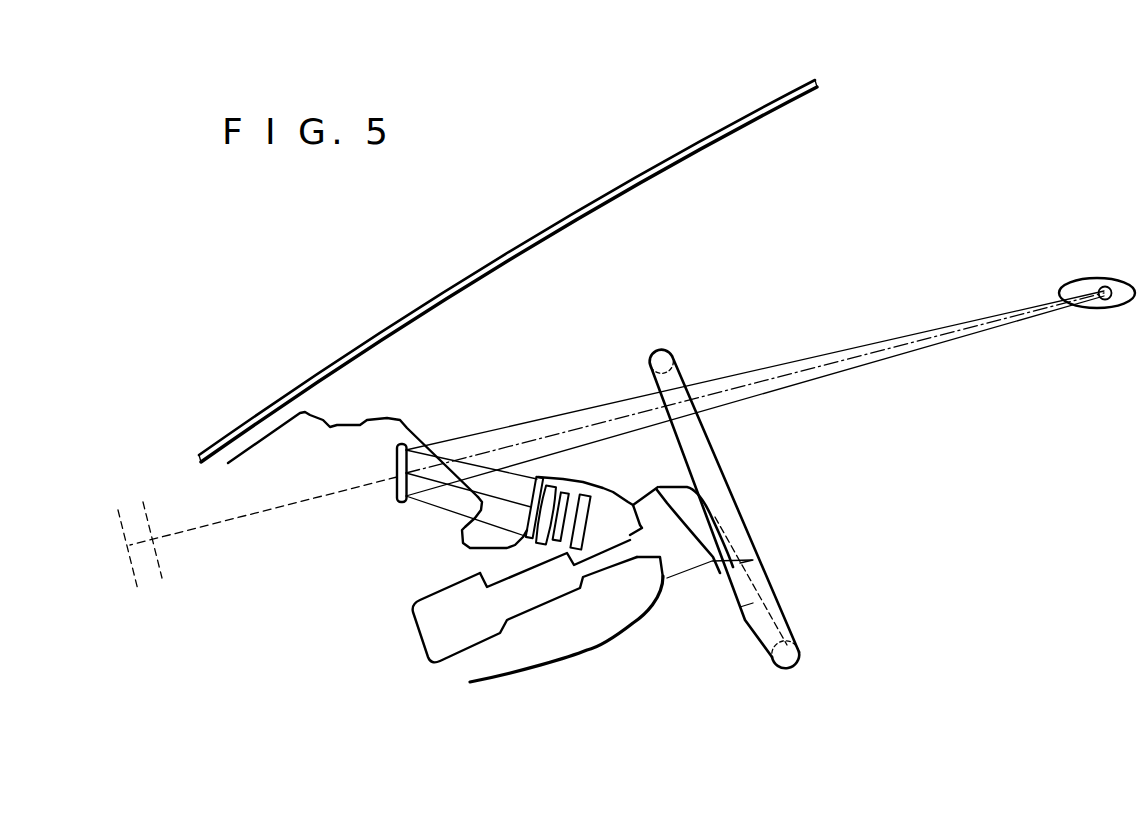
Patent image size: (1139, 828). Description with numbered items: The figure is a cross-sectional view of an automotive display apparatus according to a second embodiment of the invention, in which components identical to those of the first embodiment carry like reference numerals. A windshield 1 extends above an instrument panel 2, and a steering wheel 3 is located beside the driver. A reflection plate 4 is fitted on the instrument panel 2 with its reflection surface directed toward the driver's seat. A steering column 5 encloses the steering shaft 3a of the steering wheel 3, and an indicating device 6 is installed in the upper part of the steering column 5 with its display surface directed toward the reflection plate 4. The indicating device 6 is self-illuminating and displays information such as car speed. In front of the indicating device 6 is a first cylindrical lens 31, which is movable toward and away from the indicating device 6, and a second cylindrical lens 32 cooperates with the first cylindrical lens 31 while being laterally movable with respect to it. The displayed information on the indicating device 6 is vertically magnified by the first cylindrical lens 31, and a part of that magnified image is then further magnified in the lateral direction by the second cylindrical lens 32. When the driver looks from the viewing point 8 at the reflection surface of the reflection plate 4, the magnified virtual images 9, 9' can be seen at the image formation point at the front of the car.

The windshield 1 is at (505, 258).
The instrument panel 2 is at (410, 432).
The steering wheel 3 is at (730, 510).
The steering shaft 3a is at (540, 590).
The reflection plate 4 is at (402, 505).
The steering column 5 is at (600, 530).
The indicating device 6 is at (580, 478).
The viewing point 8 is at (1108, 300).
The magnified virtual image 9 is at (183, 549).
The magnified virtual image 9' is at (144, 570).
The first cylindrical lens 31 is at (556, 470).
The second cylindrical lens 32 is at (535, 477).